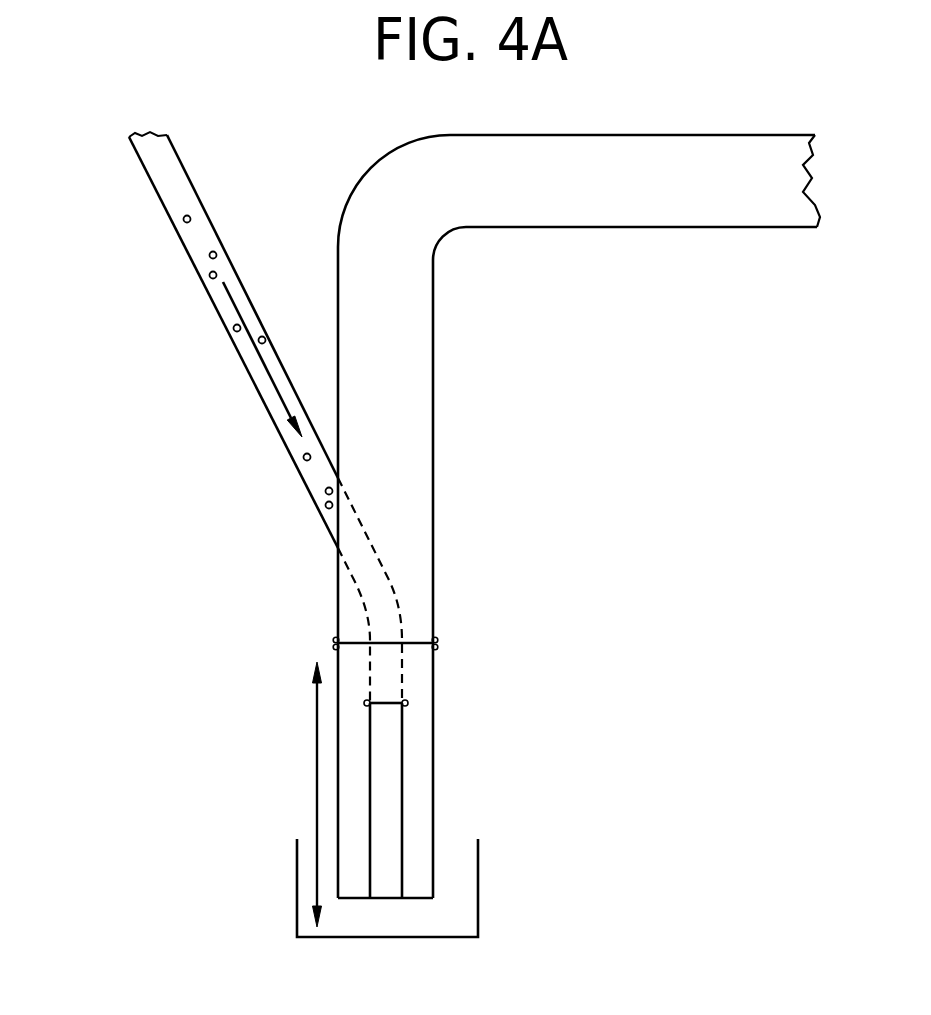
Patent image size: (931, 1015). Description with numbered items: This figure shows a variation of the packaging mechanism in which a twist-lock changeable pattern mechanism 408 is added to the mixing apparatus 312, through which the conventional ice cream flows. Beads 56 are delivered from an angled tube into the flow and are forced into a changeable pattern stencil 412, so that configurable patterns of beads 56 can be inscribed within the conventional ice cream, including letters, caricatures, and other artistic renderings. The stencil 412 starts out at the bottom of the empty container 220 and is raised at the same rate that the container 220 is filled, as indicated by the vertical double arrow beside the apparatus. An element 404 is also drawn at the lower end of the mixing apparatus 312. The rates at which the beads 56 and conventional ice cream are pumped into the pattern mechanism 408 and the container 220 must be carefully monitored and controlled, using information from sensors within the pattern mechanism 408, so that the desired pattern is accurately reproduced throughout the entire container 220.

The beads 56 is at (265, 340).
The mixing apparatus 312 is at (412, 375).
The seal 404 is at (437, 638).
The changeable pattern stencil 412 is at (388, 698).
The twist-lock changeable pattern mechanism 408 is at (407, 703).
The container 220 is at (297, 870).